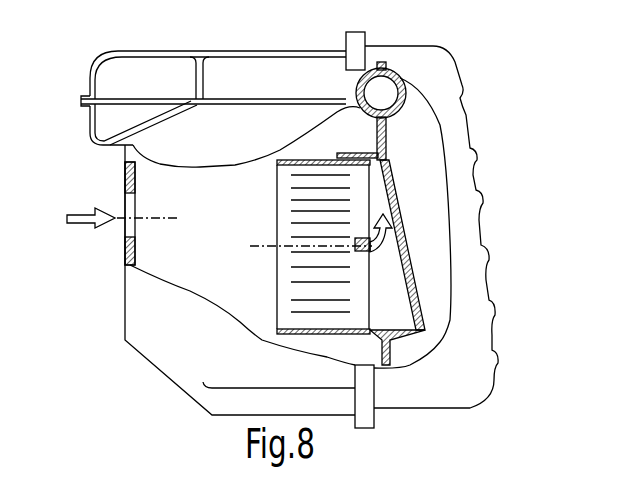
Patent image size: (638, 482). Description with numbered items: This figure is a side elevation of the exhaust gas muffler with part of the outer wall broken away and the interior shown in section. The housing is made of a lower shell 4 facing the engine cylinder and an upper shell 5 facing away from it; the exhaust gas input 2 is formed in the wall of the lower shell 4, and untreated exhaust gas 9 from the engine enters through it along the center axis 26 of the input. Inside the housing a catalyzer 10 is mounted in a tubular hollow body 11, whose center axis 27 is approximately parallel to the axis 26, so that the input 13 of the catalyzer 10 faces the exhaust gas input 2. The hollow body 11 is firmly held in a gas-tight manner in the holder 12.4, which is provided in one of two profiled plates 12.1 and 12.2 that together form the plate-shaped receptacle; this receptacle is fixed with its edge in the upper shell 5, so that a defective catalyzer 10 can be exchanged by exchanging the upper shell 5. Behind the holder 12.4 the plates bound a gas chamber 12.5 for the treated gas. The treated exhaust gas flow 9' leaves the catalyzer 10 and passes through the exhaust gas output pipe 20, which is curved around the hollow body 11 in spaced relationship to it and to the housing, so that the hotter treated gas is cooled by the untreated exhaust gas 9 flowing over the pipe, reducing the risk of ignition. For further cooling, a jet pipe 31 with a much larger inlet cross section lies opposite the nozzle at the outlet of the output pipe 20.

The exhaust gas input 2 is at (125, 240).
The lower shell 4 is at (167, 353).
The upper shell 5 is at (476, 292).
The exhaust gas 9 is at (91, 200).
The treated exhaust gas flow 9' is at (375, 255).
The catalyzer 10 is at (305, 290).
The hollow body 11 is at (280, 153).
The profiled plate 12.1 is at (377, 138).
The profiled plate 12.2 is at (393, 177).
The holder 12.4 is at (343, 338).
The gas chamber 12.5 is at (408, 321).
The input of the catalyzer 13 is at (276, 203).
The exhaust gas output pipe 20 is at (387, 93).
The center axis of the exhaust gas input 26 is at (165, 212).
The center axis of the hollow body 27 is at (270, 247).
The jet pipe 31 is at (253, 67).